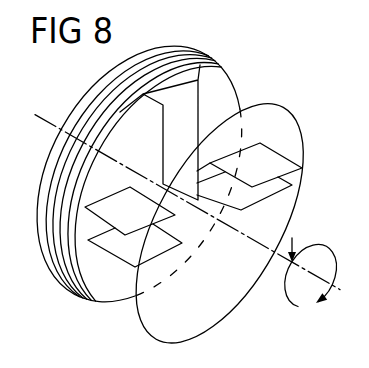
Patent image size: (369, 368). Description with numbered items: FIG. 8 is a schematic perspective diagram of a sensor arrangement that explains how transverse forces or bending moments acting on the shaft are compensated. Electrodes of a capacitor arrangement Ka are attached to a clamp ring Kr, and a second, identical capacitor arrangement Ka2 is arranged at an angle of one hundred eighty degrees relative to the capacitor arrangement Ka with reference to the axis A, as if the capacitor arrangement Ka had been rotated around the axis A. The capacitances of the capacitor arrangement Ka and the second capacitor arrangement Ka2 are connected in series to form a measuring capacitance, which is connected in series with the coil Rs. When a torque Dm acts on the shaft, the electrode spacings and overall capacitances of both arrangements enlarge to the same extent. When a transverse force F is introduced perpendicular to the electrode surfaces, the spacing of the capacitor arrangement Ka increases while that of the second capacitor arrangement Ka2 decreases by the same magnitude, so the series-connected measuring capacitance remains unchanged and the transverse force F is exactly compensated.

The axis A is at (187, 192).
The clamp ring Kr is at (98, 288).
The coil Rs is at (187, 57).
The second capacitor arrangement Ka2 is at (304, 117).
The capacitor arrangement Ka is at (120, 282).
The transverse force F is at (294, 239).
The torque Dm is at (298, 310).